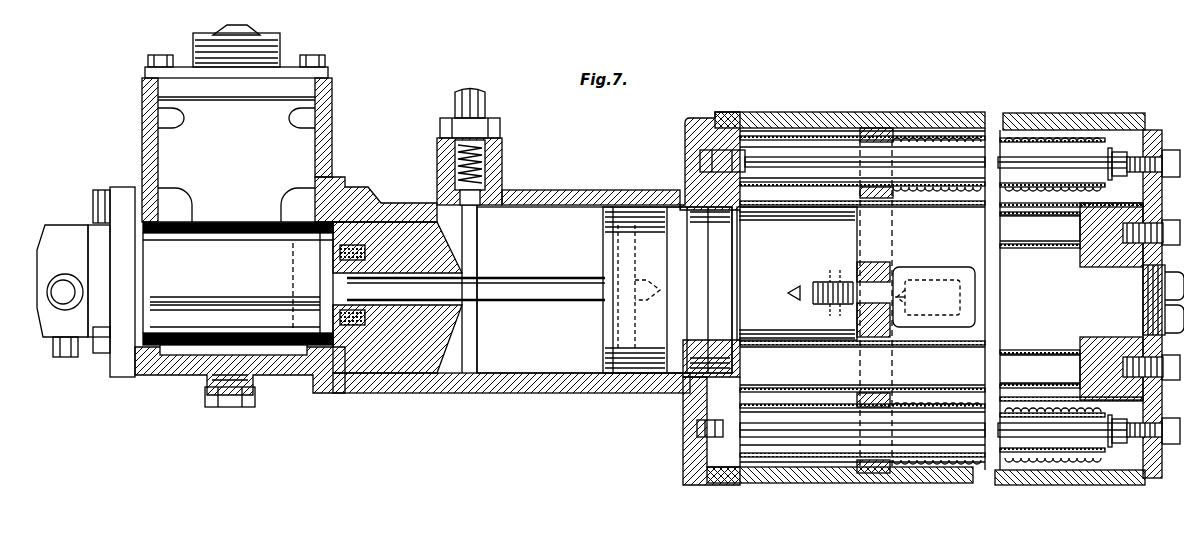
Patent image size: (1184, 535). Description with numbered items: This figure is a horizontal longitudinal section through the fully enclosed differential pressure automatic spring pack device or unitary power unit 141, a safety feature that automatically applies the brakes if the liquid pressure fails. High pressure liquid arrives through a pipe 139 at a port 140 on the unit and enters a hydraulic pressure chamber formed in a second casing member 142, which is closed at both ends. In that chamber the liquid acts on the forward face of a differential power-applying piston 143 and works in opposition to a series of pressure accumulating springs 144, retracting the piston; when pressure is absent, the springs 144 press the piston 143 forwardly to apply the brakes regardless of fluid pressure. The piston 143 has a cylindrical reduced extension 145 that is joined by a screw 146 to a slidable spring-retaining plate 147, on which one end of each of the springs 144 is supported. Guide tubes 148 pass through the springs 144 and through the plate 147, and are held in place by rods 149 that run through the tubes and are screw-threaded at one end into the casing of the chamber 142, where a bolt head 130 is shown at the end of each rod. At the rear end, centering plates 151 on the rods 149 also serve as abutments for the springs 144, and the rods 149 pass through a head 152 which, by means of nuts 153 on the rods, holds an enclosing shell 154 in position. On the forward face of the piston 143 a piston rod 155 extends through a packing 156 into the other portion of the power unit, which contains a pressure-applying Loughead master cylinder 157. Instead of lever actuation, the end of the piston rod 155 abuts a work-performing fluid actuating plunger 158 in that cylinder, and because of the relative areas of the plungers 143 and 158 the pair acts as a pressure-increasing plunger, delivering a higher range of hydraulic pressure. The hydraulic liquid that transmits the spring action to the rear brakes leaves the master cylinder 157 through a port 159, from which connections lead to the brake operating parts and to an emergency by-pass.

The bolt head 130 is at (738, 142).
The pipe 139 is at (485, 103).
The port 140 is at (492, 180).
The differential pressure automatic spring pack device 141 is at (982, 110).
The second casing member 142 is at (580, 200).
The piston 143 is at (637, 200).
The pressure accumulating springs 144 is at (1018, 120).
The cylindrical reduced extension 145 is at (780, 322).
The screw 146 is at (968, 295).
The spring-retaining plate 147 is at (857, 483).
The guide tubes 148 is at (848, 130).
The rods 149 is at (790, 157).
The centering plates 151 is at (1110, 128).
The head 152 is at (1153, 128).
The nuts 153 is at (1112, 185).
The enclosing shell 154 is at (913, 118).
The piston rod 155 is at (538, 280).
The packing 156 is at (392, 345).
The Loughead master cylinder 157 is at (322, 110).
The fluid actuating plunger 158 is at (375, 215).
The port 159 is at (55, 320).